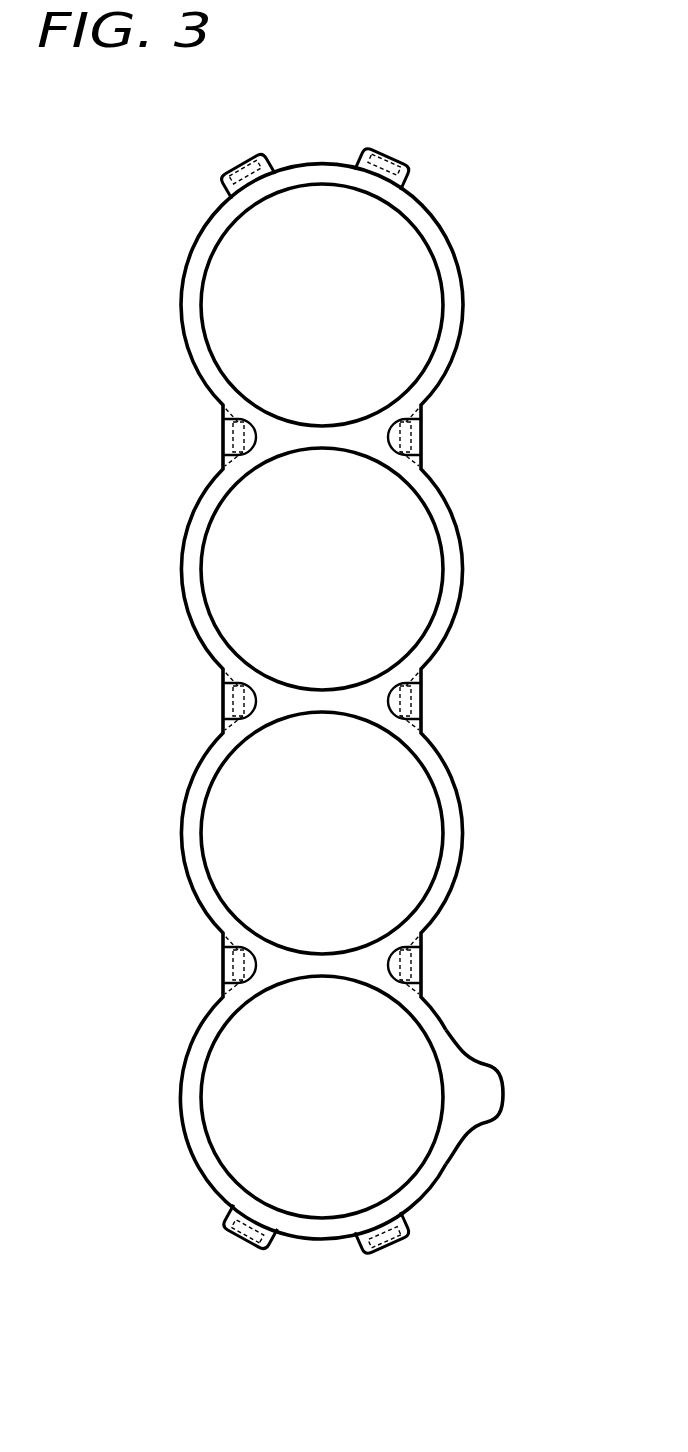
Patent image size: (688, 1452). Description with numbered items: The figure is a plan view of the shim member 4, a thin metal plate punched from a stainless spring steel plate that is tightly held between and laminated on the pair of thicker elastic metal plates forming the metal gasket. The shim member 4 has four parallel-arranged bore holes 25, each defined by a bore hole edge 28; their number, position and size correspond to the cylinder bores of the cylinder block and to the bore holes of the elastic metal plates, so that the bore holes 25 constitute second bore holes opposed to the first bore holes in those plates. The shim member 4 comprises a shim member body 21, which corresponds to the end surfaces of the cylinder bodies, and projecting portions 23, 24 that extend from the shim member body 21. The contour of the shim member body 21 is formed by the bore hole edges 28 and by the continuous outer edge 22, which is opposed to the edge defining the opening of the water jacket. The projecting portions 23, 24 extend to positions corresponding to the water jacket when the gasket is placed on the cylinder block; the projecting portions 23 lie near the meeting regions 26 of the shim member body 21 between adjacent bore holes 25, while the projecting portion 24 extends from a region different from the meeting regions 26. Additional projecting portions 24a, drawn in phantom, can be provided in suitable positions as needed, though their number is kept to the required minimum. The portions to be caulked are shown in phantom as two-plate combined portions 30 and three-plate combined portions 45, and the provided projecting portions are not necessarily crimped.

The shim member 4 is at (452, 220).
The shim member body 21 is at (205, 238).
The continuous outer edge 22 is at (182, 302).
The projecting portions 23 is at (248, 437).
The projecting portion 24 is at (488, 1087).
The projecting portions 24a is at (238, 162).
The bore holes 25 is at (346, 333).
The meeting regions 26 is at (312, 437).
The bore hole edges 28 is at (322, 185).
The two-plate combined portions 30 is at (334, 699).
The three-plate combined portions 45 is at (272, 158).